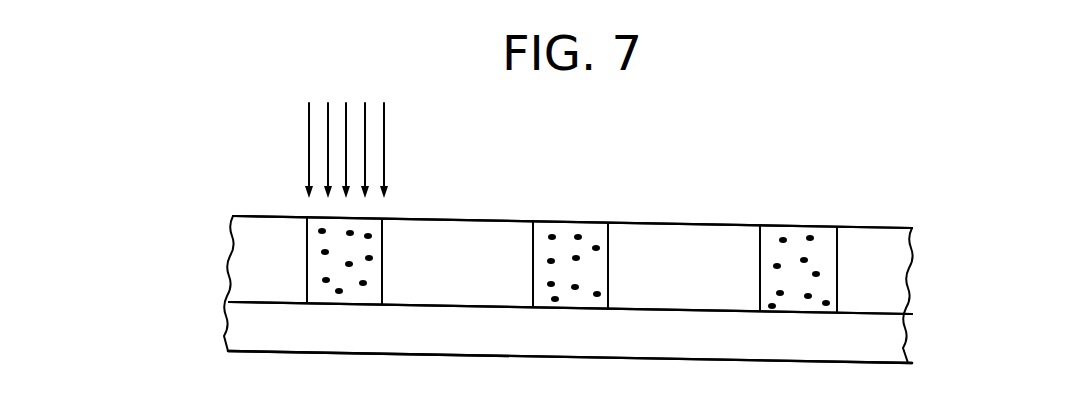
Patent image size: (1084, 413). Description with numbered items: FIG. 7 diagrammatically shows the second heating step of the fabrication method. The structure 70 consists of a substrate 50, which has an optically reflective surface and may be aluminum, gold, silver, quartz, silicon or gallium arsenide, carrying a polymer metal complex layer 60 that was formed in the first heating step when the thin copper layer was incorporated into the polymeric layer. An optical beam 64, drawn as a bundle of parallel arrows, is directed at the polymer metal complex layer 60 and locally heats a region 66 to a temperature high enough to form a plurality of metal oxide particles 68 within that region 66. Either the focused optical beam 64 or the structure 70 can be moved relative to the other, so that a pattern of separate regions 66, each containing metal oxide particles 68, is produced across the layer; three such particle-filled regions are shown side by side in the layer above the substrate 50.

The substrate 50 is at (243, 323).
The polymer metal complex layer 60 is at (243, 250).
The optical beam 64 is at (400, 137).
The region 66 is at (320, 242).
The metal oxide particles 68 is at (578, 236).
The structure 70 is at (128, 238).